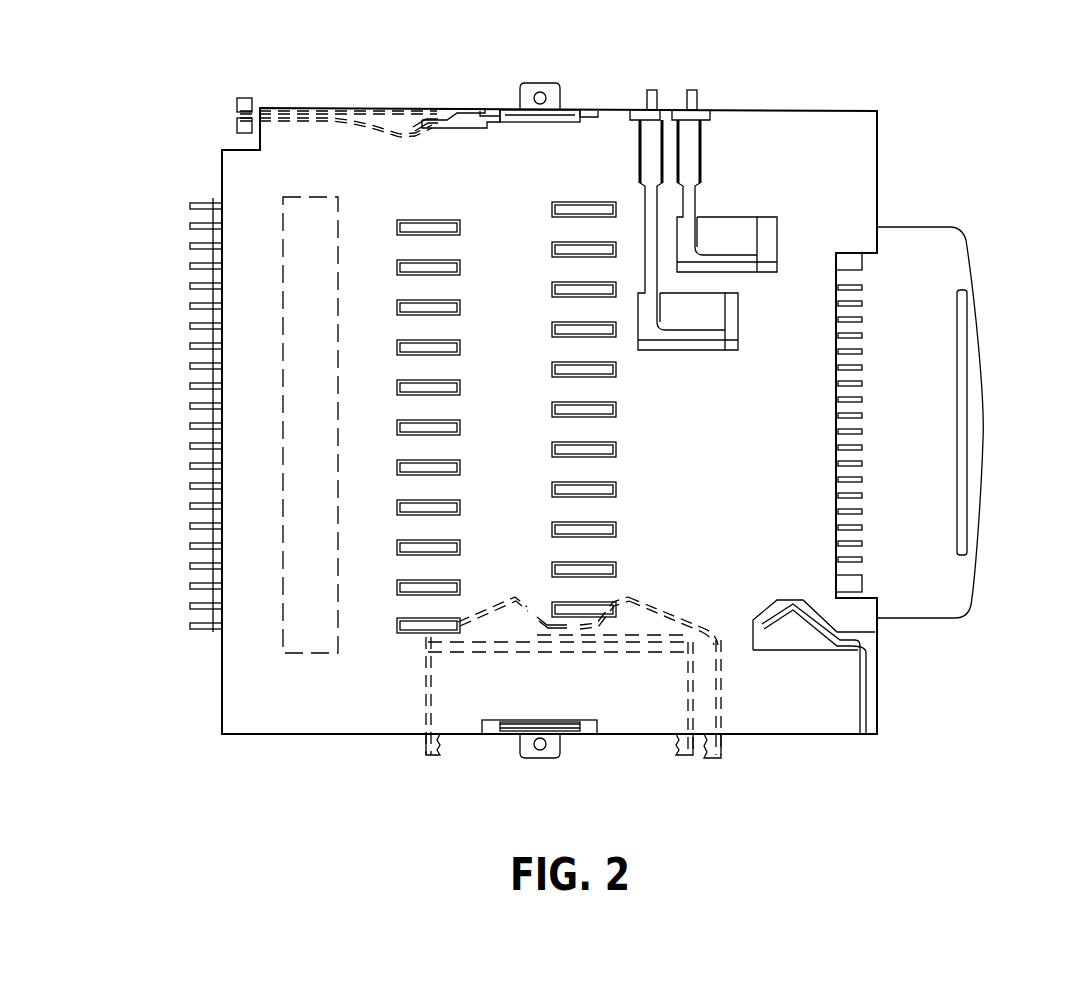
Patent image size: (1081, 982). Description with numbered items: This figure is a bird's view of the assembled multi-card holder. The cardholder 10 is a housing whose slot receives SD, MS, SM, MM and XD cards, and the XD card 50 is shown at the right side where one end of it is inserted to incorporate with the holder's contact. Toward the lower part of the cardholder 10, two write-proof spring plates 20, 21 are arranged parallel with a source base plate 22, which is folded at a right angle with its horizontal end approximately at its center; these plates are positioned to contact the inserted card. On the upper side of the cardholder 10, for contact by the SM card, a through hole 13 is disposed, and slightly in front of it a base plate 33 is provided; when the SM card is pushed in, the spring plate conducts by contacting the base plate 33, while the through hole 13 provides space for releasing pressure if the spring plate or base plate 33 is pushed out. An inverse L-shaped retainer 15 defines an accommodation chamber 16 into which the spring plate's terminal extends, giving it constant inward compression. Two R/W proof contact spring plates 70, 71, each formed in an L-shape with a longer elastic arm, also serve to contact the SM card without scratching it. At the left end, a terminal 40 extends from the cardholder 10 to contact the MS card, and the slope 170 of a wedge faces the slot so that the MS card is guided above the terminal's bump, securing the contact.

The cardholder 10 is at (855, 177).
The through hole 13 is at (380, 130).
The retainer 15 is at (475, 120).
The accommodation chamber 16 is at (448, 110).
The write-proof spring plate 20 is at (428, 692).
The write-proof spring plate 21 is at (718, 703).
The source base plate 22 is at (690, 703).
The base plate 33 is at (342, 110).
The terminal 40 is at (200, 628).
The XD card 50 is at (952, 257).
The R/W proof contact spring plate 70 is at (648, 160).
The R/W proof contact spring plate 71 is at (690, 165).
The slope 170 is at (280, 286).